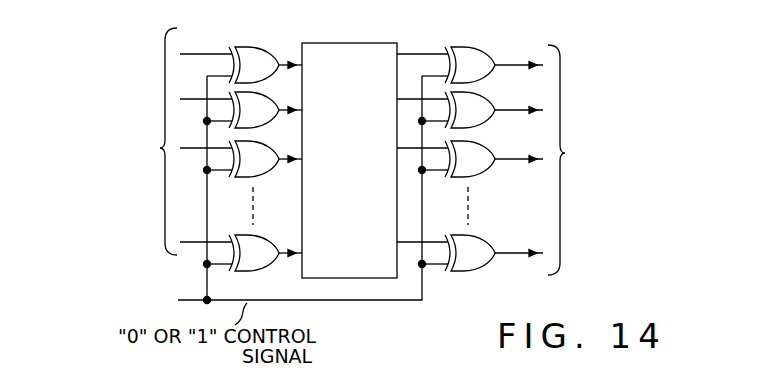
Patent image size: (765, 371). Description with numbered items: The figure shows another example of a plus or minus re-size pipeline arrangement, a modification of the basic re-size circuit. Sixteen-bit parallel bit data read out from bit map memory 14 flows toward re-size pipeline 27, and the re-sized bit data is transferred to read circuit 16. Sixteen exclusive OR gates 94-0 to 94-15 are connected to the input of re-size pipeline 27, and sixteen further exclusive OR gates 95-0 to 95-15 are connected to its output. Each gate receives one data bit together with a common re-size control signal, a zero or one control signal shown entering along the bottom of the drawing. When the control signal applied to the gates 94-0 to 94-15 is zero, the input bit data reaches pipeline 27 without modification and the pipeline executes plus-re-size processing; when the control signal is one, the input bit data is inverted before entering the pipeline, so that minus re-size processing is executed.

The re-size pipeline 27 is at (347, 43).
The exclusive OR gate 94-0 is at (251, 47).
The exclusive OR gate 94-15 is at (257, 260).
The exclusive OR gate 95-0 is at (468, 46).
The exclusive OR gate 95-15 is at (478, 260).
The bit map memory 14 is at (106, 141).
The read circuit 16 is at (624, 160).